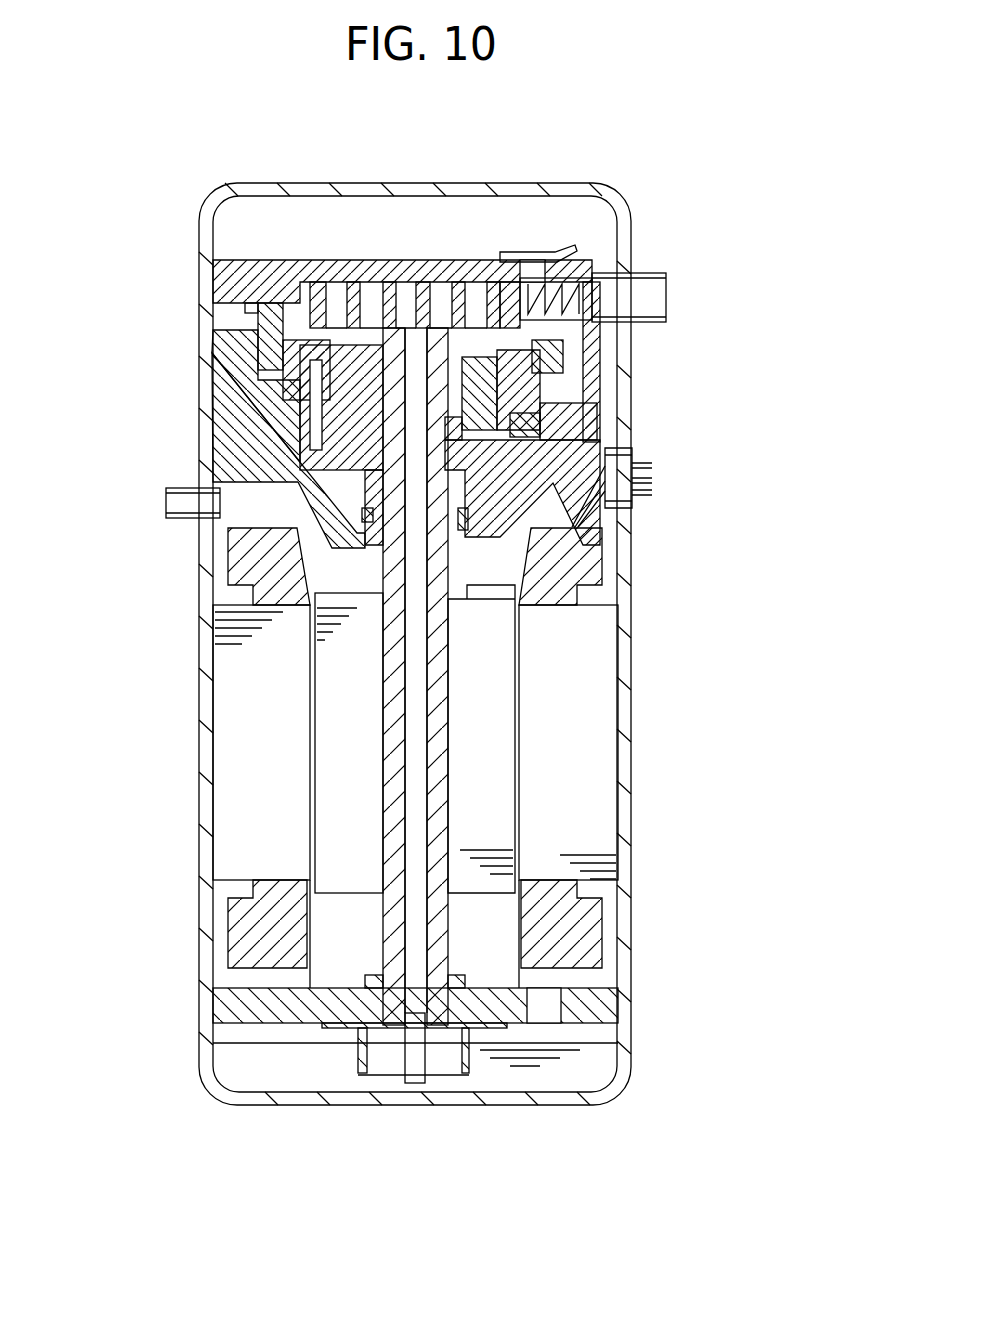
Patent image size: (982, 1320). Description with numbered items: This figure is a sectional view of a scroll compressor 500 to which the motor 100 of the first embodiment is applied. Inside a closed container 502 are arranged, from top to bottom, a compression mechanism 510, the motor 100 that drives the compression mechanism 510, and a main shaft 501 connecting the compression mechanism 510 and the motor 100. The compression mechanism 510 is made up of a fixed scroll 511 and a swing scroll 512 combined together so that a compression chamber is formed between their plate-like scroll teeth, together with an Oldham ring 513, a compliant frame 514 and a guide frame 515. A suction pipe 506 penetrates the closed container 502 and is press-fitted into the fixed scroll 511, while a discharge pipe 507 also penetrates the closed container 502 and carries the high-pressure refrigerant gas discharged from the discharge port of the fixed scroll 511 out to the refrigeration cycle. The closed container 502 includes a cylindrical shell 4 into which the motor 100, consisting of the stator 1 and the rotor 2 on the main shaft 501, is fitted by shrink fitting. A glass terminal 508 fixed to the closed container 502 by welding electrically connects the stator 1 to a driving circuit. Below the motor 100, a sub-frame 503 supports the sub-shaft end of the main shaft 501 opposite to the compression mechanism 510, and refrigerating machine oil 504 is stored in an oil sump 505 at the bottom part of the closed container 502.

The scroll compressor 500 is at (656, 191).
The closed container 502 is at (618, 624).
The cylindrical shell 4 is at (631, 770).
The compression mechanism 510 is at (324, 384).
The fixed scroll 511 is at (230, 272).
The swing scroll 512 is at (232, 318).
The Oldham ring 513 is at (252, 347).
The compliant frame 514 is at (252, 385).
The guide frame 515 is at (250, 450).
The suction pipe 506 is at (650, 325).
The discharge pipe 507 is at (164, 505).
The glass terminal 508 is at (633, 500).
The main shaft 501 is at (383, 565).
The motor 100 is at (351, 758).
The stator 1 is at (232, 690).
The rotor 2 is at (330, 785).
The sub-frame 503 is at (586, 1013).
The refrigerating machine oil 504 is at (560, 1058).
The oil sump 505 is at (243, 1070).